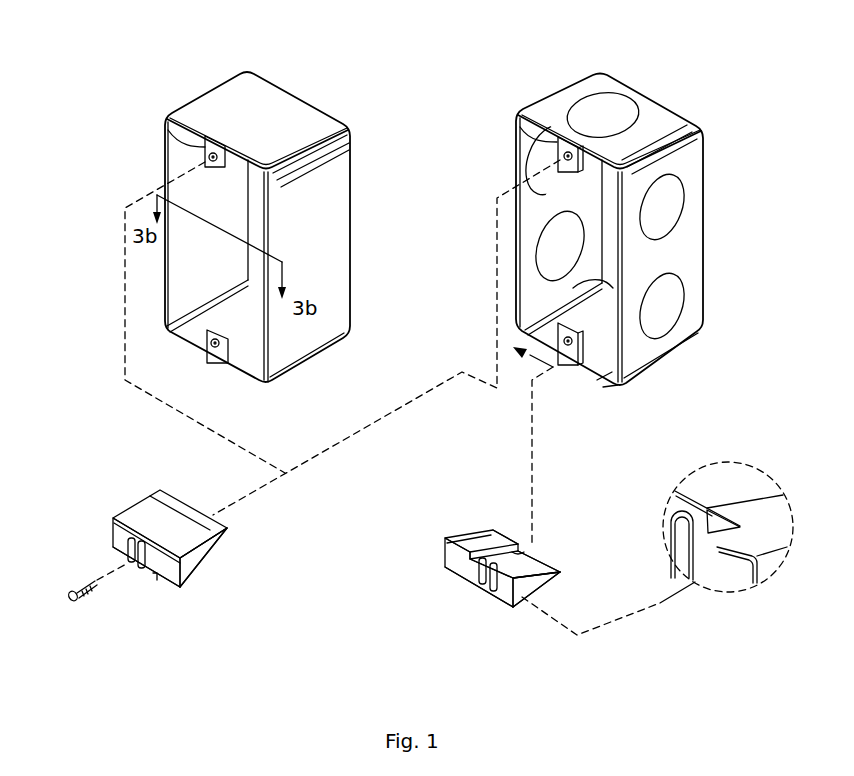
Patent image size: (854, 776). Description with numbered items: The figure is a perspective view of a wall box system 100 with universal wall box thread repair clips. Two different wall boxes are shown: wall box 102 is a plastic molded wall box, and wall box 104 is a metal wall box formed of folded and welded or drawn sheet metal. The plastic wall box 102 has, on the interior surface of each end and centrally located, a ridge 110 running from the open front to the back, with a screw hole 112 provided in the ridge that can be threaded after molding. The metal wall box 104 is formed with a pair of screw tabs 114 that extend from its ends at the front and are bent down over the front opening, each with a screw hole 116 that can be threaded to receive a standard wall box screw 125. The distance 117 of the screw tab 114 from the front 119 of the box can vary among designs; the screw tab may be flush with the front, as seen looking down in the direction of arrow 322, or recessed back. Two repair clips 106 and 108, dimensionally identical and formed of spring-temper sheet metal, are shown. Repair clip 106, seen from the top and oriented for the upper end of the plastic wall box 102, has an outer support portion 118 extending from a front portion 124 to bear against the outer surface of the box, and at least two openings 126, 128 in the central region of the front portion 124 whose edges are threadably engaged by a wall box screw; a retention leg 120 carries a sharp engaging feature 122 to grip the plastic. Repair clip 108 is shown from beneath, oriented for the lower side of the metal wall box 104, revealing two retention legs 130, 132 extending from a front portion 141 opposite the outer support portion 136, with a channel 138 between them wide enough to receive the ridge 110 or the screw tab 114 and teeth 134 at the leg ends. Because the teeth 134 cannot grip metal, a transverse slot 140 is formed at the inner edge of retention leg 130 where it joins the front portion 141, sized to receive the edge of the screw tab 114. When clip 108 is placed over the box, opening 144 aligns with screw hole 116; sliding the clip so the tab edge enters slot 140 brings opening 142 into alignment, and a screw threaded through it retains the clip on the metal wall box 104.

The electrical box assembly 100 is at (467, 41).
The plastic wall box 102 is at (320, 111).
The metal wall box 104 is at (680, 118).
The repair clip 106 is at (138, 502).
The repair clip 108 is at (483, 530).
The ridge 110 is at (163, 123).
The screw hole 112 is at (208, 156).
The screw tab 114 is at (518, 119).
The screw hole 116 is at (564, 156).
The distance 117 is at (597, 380).
The front 119 is at (603, 387).
The outer support portion 118 is at (177, 512).
The retention leg 120 is at (217, 555).
The engaging feature 122 is at (230, 528).
The front portion 124 is at (180, 587).
The wall box screw 125 is at (87, 595).
The opening 126 is at (147, 572).
The opening 128 is at (122, 542).
The retention leg 130 is at (543, 560).
The retention leg 132 is at (508, 540).
The teeth 134 is at (561, 573).
The outer support portion 136 is at (547, 593).
The channel 138 is at (528, 549).
The slot 140 is at (718, 527).
The front portion 141 is at (457, 560).
The opening 142 is at (492, 592).
The opening 144 is at (478, 583).
The arrow 322 is at (570, 308).